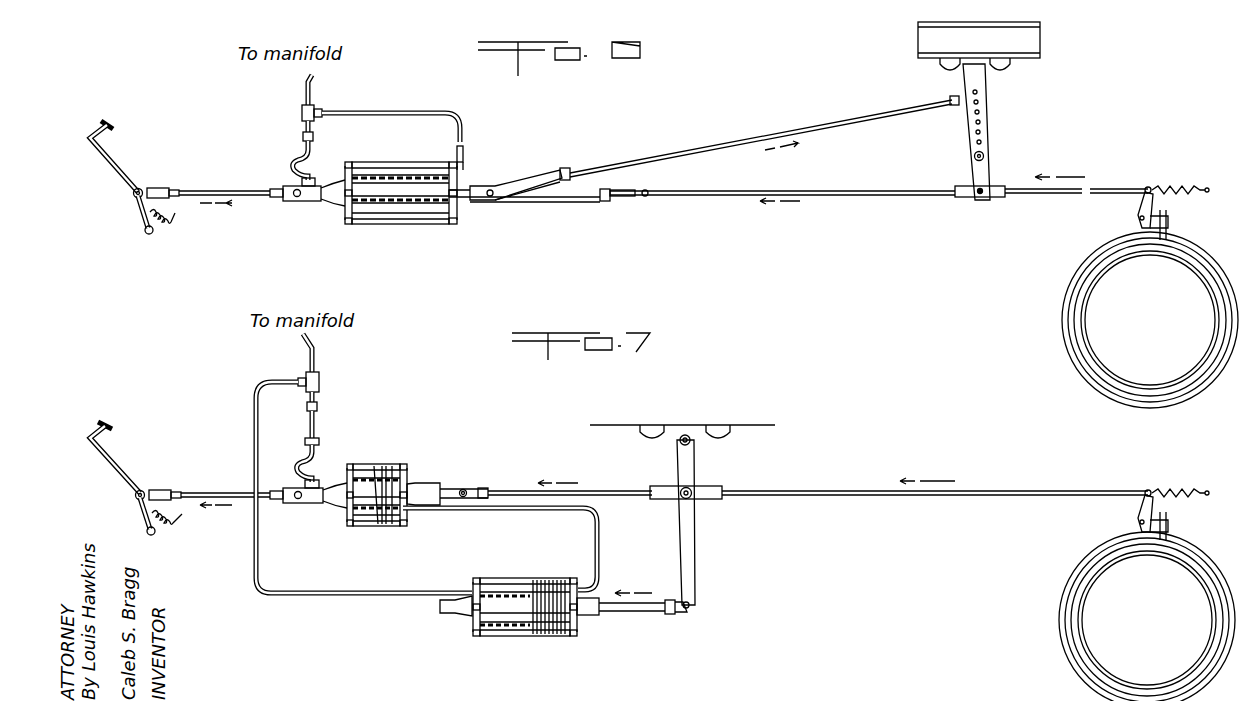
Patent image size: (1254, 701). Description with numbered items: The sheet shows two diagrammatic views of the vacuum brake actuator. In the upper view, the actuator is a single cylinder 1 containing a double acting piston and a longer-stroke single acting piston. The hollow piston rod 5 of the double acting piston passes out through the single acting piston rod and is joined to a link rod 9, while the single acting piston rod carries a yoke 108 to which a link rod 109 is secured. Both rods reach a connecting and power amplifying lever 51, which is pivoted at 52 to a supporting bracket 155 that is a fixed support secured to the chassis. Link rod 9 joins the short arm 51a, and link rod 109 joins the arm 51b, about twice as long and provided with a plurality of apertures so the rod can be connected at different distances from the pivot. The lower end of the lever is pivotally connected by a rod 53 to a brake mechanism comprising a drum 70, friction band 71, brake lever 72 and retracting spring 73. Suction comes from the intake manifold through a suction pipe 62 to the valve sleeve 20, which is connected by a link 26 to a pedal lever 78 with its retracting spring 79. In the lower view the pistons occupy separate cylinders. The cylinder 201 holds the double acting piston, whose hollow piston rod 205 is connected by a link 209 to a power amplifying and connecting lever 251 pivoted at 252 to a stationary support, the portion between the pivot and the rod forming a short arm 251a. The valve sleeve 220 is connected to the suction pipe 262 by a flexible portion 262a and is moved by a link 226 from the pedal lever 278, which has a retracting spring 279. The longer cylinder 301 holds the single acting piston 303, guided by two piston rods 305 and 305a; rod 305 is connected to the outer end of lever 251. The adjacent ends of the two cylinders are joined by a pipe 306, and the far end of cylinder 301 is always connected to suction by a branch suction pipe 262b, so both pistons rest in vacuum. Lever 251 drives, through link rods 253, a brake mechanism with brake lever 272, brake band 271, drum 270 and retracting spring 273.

In FIG. 6, the cylinder 1 is at (396, 171).
In FIG. 6, the hollow piston rod 5 is at (567, 199).
In FIG. 6, the link rod 9 is at (862, 192).
In FIG. 6, the sleeve 20 is at (310, 202).
In FIG. 6, the link 26 is at (220, 190).
In FIG. 6, the connecting and power amplifying lever 51 is at (985, 162).
In FIG. 6, the short arm 51a is at (975, 198).
In FIG. 6, the long arm 51b is at (987, 108).
In FIG. 6, the pivot 52 is at (974, 156).
In FIG. 6, the link rod 53 is at (1055, 194).
In FIG. 6, the suction pipe 62 is at (314, 86).
In FIG. 6, the drum 70 is at (1222, 302).
In FIG. 6, the friction band 71 is at (1178, 245).
In FIG. 6, the brake lever 72 is at (1150, 208).
In FIG. 6, the retracting spring 73 is at (1185, 186).
In FIG. 6, the pedal lever 78 is at (118, 178).
In FIG. 6, the retracting spring 79 is at (168, 217).
In FIG. 6, the yoke 108 is at (524, 180).
In FIG. 6, the link rod 109 is at (834, 117).
In FIG. 6, the supporting bracket 155 is at (988, 76).
In FIG. 7, the cylinder 201 is at (373, 480).
In FIG. 7, the hollow piston rod 205 is at (435, 488).
In FIG. 7, the link 209 is at (590, 490).
In FIG. 7, the valve sleeve 220 is at (317, 505).
In FIG. 7, the link 226 is at (215, 486).
In FIG. 7, the power amplifying and connecting lever 251 is at (696, 498).
In FIG. 7, the short arm 251a is at (694, 462).
In FIG. 7, the pivot 252 is at (690, 436).
In FIG. 7, the link rod 253 is at (835, 490).
In FIG. 7, the suction pipe 262 is at (316, 350).
In FIG. 7, the flexible portion 262a is at (323, 452).
In FIG. 7, the branch suction pipe 262b is at (372, 594).
In FIG. 7, the drum 270 is at (1078, 614).
In FIG. 7, the brake band 271 is at (1080, 566).
In FIG. 7, the brake lever 272 is at (1142, 512).
In FIG. 7, the retracting spring 273 is at (1178, 489).
In FIG. 7, the pedal lever 278 is at (118, 472).
In FIG. 7, the retracting spring 279 is at (182, 517).
In FIG. 7, the cylinder 301 is at (550, 625).
In FIG. 7, the piston 303 is at (577, 636).
In FIG. 7, the piston rod 305 is at (632, 616).
In FIG. 7, the piston rod 305a is at (440, 612).
In FIG. 7, the pipe 306 is at (540, 510).